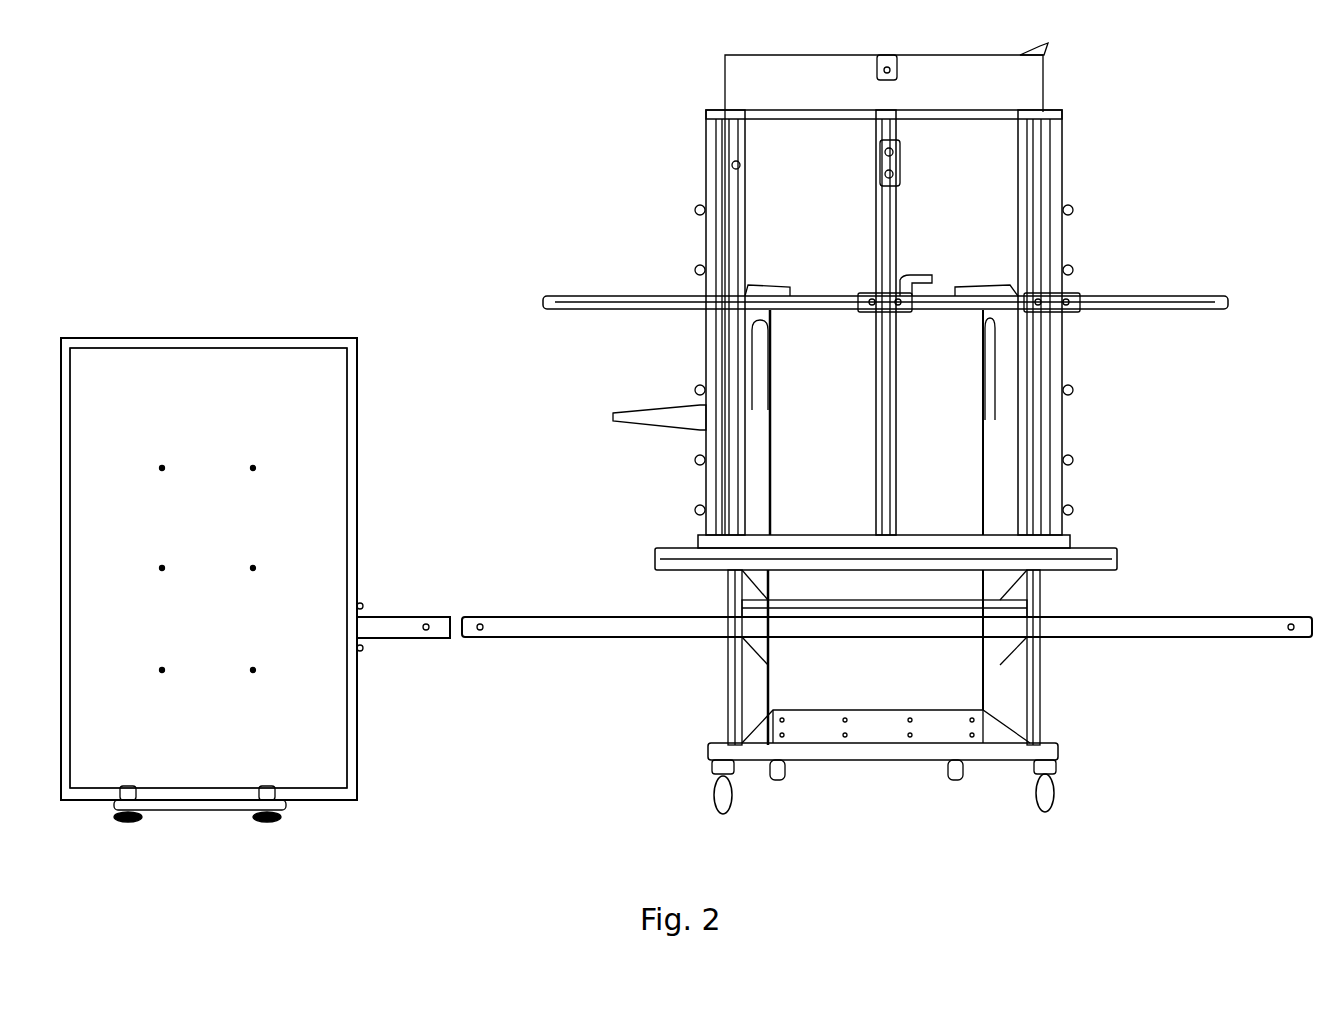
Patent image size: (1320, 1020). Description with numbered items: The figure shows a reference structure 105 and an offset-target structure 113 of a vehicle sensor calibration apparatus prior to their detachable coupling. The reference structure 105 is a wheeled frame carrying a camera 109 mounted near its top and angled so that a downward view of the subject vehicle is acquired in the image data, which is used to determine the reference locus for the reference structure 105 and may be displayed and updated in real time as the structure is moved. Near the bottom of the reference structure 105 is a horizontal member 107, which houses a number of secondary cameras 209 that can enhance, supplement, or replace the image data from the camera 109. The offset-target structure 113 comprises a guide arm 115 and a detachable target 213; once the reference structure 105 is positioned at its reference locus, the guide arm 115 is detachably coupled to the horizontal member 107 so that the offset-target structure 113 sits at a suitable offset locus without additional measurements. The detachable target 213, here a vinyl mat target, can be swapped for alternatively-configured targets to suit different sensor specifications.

The reference structure 105 is at (592, 140).
The horizontal member 107 is at (566, 619).
The camera 109 is at (888, 55).
The offset-target structure 113 is at (408, 322).
The guide arm 115 is at (402, 616).
The secondary cameras 209 is at (474, 636).
The detachable target 213 is at (232, 404).